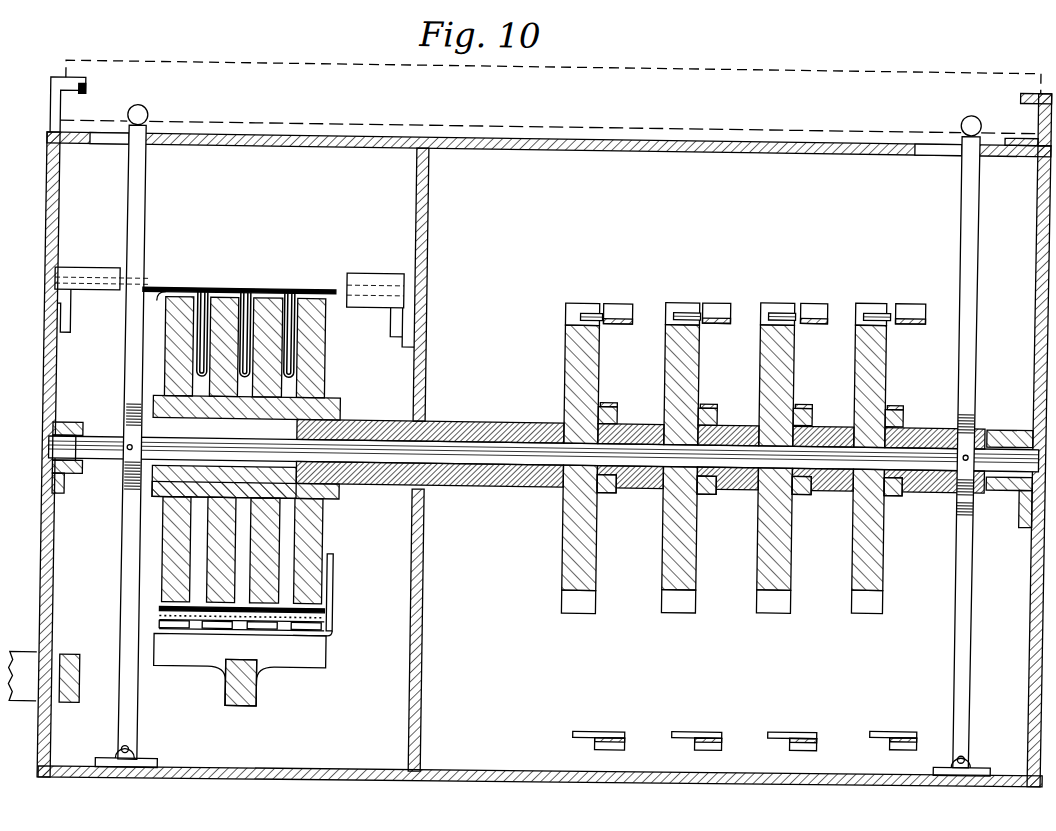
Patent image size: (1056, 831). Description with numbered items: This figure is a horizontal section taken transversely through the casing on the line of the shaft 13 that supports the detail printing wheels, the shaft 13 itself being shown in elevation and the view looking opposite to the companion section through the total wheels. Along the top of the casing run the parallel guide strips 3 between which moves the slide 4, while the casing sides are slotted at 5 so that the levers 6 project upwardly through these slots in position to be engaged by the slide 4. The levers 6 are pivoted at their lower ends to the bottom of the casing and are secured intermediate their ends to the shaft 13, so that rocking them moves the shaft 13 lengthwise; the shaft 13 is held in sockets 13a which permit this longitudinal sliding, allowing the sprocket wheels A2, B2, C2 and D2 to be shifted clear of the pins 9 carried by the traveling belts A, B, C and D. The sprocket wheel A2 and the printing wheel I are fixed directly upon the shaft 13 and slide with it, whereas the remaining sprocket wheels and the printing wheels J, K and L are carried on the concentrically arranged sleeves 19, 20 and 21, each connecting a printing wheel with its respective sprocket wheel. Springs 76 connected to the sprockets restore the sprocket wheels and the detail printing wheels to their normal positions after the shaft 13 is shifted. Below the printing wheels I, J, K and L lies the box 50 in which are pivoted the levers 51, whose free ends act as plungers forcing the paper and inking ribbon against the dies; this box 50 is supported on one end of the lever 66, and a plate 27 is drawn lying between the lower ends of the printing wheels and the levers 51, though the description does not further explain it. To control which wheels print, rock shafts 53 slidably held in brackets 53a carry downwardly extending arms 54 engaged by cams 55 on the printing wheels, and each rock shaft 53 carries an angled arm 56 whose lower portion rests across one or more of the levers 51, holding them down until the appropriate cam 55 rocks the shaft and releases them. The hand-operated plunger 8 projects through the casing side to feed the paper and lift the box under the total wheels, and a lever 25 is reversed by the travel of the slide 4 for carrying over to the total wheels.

The guide strips 3 is at (50, 100).
The slide 4 is at (550, 97).
The slots 5 is at (105, 143).
The levers 6 is at (147, 164).
The hand-operated plunger 8 is at (29, 665).
The pins 9 is at (585, 304).
The shaft 13 is at (99, 442).
The sockets 13a is at (88, 477).
The sleeve 19 is at (755, 478).
The sleeve 20 is at (643, 478).
The sleeve 21 is at (533, 483).
The lever 25 is at (332, 614).
The retaining plate 27 is at (332, 607).
The box 50 is at (239, 669).
The levers 51 is at (312, 629).
The rock shafts 53 is at (212, 289).
The brackets 53a is at (395, 278).
The arms 54 is at (290, 333).
The cams 55 is at (304, 393).
The angled arm 56 is at (342, 577).
The lever 66 is at (266, 685).
The springs 76 is at (622, 396).
The printing wheel I is at (176, 434).
The printing wheel J is at (227, 294).
The printing wheel K is at (270, 294).
The printing wheel L is at (310, 293).
The traveling belt A is at (890, 291).
The traveling belt B is at (820, 292).
The traveling belt C is at (720, 294).
The traveling belt D is at (618, 292).
The sprocket wheel A2 is at (889, 358).
The sprocket wheel B2 is at (797, 360).
The sprocket wheel C2 is at (701, 366).
The sprocket wheel D2 is at (601, 352).